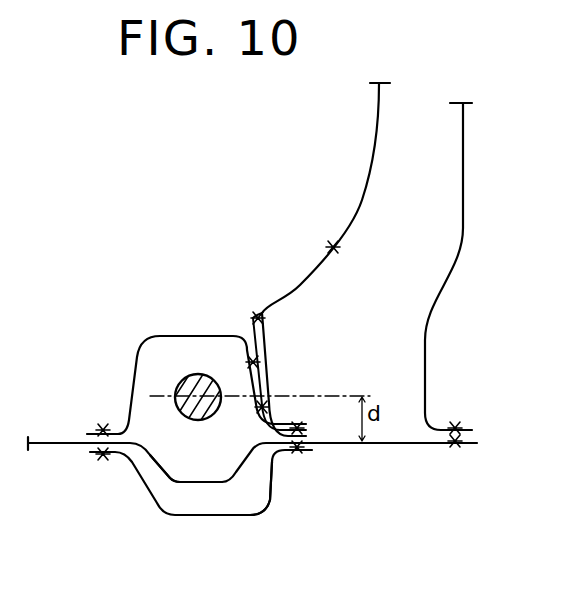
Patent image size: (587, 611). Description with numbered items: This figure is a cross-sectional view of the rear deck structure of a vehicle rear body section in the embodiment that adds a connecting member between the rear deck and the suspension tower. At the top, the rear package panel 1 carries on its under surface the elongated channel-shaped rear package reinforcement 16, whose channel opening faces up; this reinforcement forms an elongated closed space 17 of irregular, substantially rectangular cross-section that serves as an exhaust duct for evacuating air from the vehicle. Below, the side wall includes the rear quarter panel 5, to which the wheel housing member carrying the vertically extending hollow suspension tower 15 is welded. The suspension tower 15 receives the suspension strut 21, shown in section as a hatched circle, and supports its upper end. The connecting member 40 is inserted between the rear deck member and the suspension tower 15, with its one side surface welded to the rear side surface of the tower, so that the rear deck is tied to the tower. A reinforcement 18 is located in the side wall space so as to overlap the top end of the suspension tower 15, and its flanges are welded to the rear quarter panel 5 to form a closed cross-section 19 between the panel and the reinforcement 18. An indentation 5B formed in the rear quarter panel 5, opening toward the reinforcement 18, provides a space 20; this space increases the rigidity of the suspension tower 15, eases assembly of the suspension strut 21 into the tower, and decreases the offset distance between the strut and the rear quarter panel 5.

The rear package panel 1 is at (466, 164).
The rear quarter panel 5 is at (393, 441).
The indentation 5B is at (177, 484).
The suspension tower 15 is at (157, 339).
The rear package reinforcement 16 is at (369, 150).
The closed space 17 is at (366, 334).
The reinforcement 18 is at (226, 518).
The closed cross-section 19 is at (238, 490).
The space 20 is at (220, 464).
The suspension strut 21 is at (188, 377).
The connecting member 40 is at (247, 332).